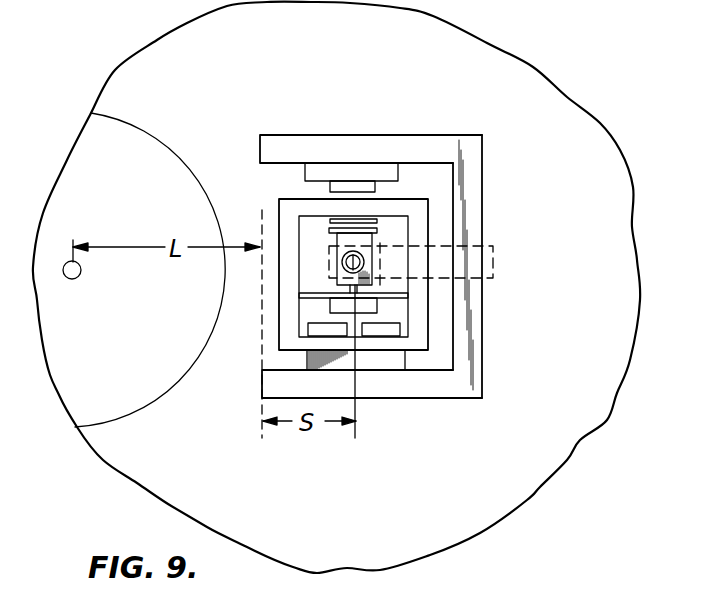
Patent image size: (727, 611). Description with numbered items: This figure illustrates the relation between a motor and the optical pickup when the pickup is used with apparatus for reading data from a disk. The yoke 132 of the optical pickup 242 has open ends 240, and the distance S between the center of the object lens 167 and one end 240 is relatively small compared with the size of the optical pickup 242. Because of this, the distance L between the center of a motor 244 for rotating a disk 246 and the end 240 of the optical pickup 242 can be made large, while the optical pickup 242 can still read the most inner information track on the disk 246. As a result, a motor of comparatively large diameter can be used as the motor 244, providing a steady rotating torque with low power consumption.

The yoke 132 is at (468, 373).
The object lens 167 is at (363, 252).
The open ends 240 is at (258, 152).
The optical pickup 242 is at (484, 173).
The motor 244 is at (137, 373).
The disk 246 is at (605, 343).